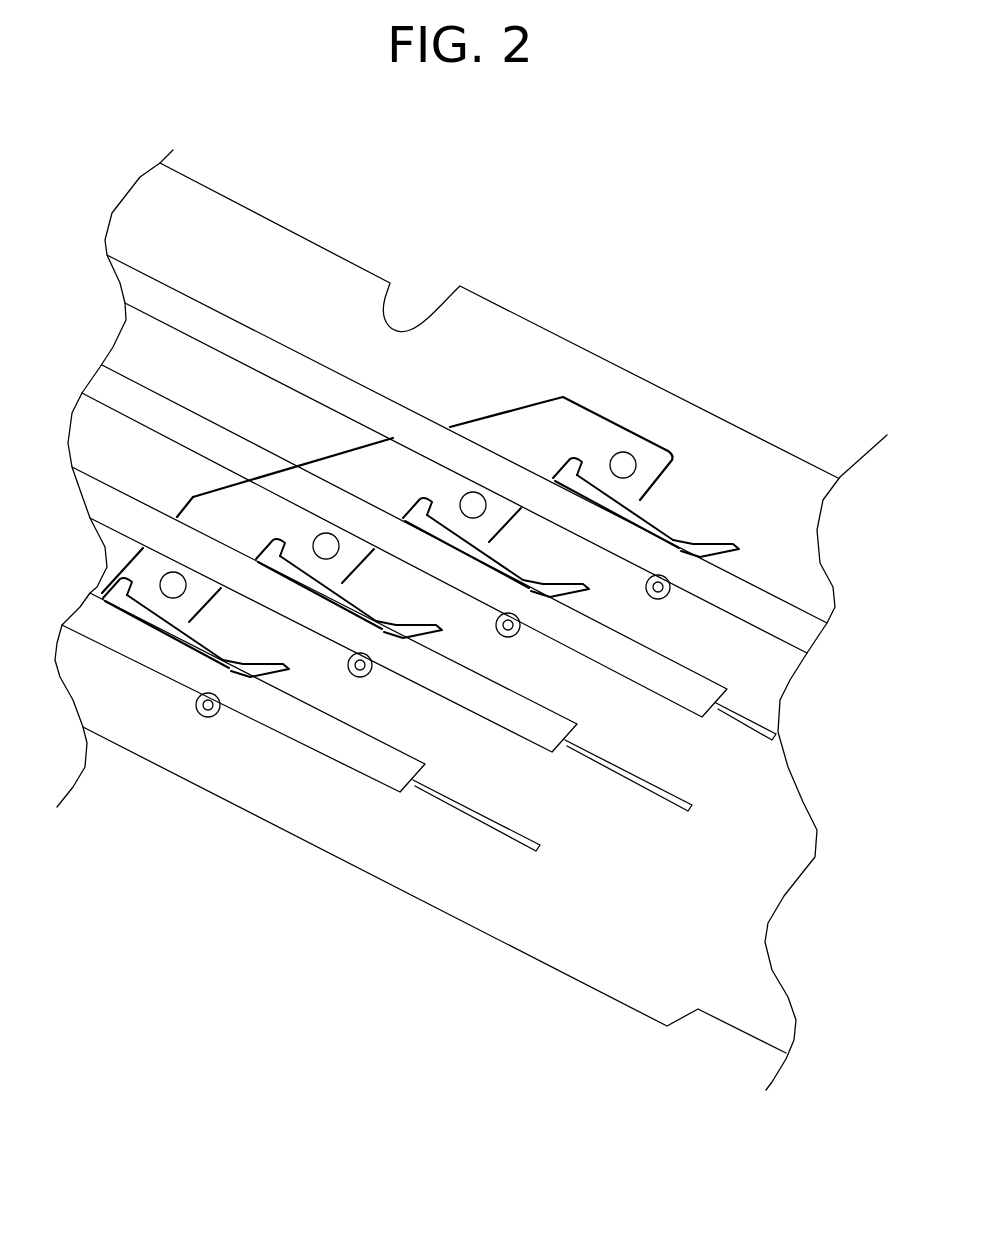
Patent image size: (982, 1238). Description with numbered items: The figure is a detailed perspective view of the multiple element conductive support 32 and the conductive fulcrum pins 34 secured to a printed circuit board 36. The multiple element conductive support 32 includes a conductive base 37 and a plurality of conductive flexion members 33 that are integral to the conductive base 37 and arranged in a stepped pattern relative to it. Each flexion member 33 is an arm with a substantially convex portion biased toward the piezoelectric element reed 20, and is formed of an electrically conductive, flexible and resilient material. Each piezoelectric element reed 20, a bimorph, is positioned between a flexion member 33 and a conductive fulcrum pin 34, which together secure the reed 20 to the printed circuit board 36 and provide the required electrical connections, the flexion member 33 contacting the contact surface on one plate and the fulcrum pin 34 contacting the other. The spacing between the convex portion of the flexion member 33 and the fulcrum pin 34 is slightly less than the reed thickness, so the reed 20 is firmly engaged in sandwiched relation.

The piezoelectric element reed 20 is at (173, 297).
The multiple element conductive support 32 is at (606, 414).
The conductive flexion member 33 is at (273, 660).
The conductive fulcrum pin 34 is at (208, 718).
The printed circuit board 36 is at (540, 320).
The conductive base 37 is at (542, 427).